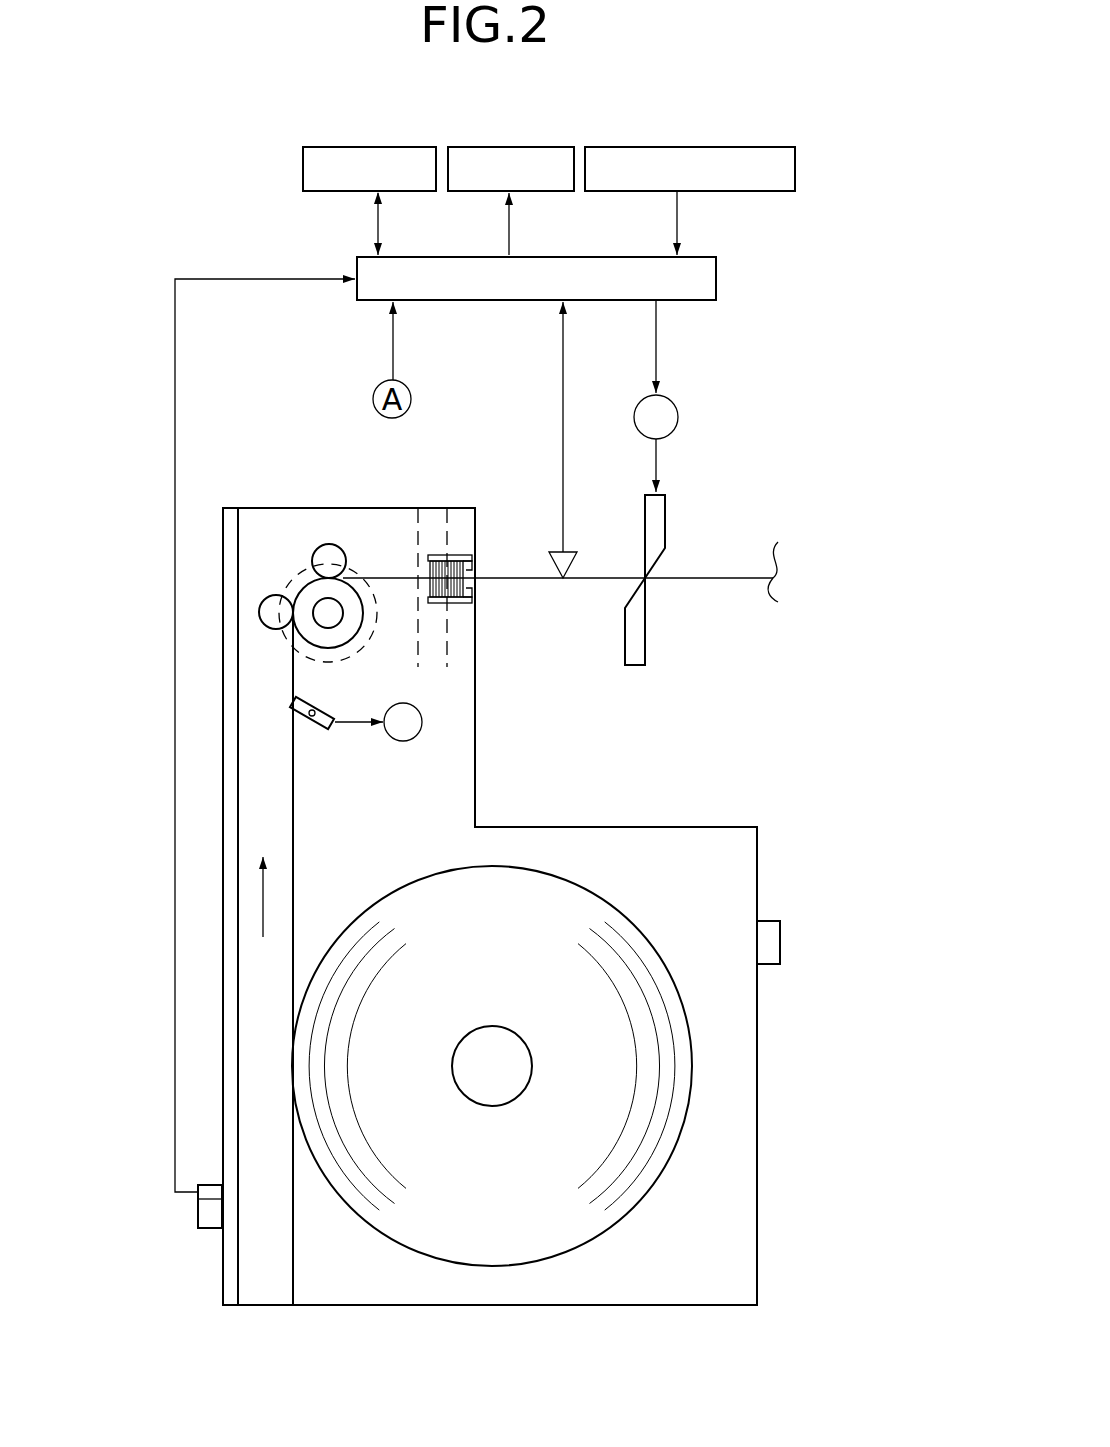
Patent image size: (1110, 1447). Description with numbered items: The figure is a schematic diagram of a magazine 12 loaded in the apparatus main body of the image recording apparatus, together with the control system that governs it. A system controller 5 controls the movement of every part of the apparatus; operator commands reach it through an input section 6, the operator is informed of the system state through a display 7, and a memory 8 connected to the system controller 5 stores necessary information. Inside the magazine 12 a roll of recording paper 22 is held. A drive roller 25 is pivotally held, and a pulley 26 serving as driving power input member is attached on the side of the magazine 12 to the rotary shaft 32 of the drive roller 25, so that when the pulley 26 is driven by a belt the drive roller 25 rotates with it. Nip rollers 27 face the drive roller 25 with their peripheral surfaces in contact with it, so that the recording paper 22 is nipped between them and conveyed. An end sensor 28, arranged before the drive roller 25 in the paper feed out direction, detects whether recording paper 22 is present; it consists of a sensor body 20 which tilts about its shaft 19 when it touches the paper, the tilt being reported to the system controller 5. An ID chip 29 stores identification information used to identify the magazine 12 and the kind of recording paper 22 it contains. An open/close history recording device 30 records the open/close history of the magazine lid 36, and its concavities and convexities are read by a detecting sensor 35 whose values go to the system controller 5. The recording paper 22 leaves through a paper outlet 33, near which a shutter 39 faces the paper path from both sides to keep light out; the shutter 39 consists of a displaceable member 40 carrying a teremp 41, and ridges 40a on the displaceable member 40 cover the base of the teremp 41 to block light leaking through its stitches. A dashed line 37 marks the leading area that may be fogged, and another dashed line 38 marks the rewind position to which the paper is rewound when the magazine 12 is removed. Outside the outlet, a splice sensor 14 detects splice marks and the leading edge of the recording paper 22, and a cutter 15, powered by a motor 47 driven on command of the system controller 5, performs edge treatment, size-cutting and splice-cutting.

The system controller 5 is at (700, 257).
The input section 6 is at (630, 147).
The display 7 is at (518, 147).
The memory 8 is at (405, 147).
The magazine 12 is at (205, 1264).
The splice sensor 14 is at (571, 563).
The cutter 15 is at (645, 640).
The shaft 19 is at (313, 704).
The sensor body 20 is at (309, 720).
The recording paper 22 is at (293, 842).
The drive roller 25 is at (307, 642).
The pulley 26 is at (307, 678).
The nip rollers 27 is at (314, 553).
The end sensor 28 is at (291, 719).
The ID chip 29 is at (780, 940).
The open/close history recording device 30 is at (203, 1228).
The rotary shaft 32 is at (342, 616).
The paper outlet 33 is at (480, 575).
The detecting sensor 35 is at (218, 1193).
The magazine lid 36 is at (228, 1025).
The dashed line 37 is at (447, 537).
The dashed line 38 is at (418, 537).
The shutter 39 is at (553, 598).
The displaceable member 40 is at (453, 603).
The ridges 40a is at (471, 603).
The teremp 41 is at (463, 583).
The motor 47 is at (678, 417).